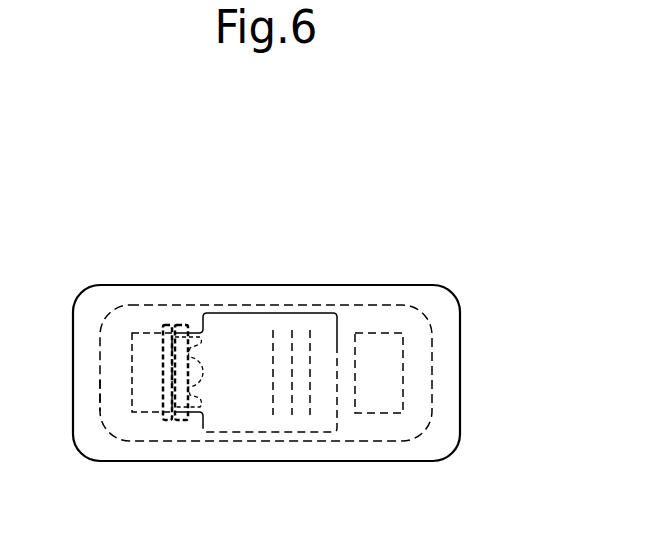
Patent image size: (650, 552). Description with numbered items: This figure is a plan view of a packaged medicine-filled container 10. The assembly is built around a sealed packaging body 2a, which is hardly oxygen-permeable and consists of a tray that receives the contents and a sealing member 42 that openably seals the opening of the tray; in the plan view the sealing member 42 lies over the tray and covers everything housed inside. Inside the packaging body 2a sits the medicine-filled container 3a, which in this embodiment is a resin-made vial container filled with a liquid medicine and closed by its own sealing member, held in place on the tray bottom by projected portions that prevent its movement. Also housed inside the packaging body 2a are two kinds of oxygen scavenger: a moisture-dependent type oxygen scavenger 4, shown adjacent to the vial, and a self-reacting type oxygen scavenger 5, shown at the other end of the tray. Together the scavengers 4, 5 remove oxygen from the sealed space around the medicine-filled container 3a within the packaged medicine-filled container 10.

The packaged medicine-filled container 10 is at (428, 265).
The sealing member 42 is at (283, 300).
The packaging body 2a is at (105, 412).
The medicine-filled container 3a is at (235, 405).
The moisture-dependent type oxygen scavenger 4 is at (143, 348).
The self-reacting type oxygen scavenger 5 is at (385, 398).